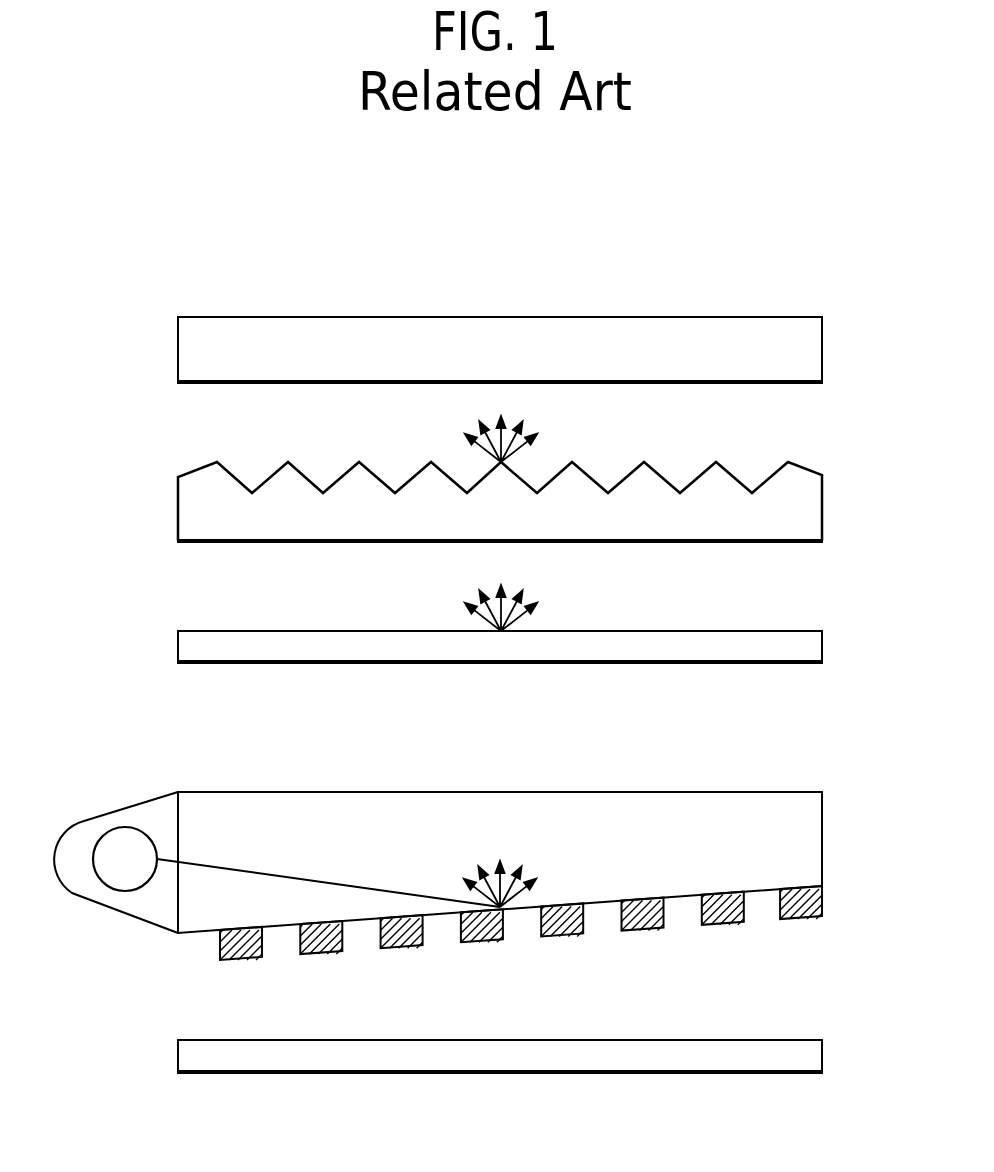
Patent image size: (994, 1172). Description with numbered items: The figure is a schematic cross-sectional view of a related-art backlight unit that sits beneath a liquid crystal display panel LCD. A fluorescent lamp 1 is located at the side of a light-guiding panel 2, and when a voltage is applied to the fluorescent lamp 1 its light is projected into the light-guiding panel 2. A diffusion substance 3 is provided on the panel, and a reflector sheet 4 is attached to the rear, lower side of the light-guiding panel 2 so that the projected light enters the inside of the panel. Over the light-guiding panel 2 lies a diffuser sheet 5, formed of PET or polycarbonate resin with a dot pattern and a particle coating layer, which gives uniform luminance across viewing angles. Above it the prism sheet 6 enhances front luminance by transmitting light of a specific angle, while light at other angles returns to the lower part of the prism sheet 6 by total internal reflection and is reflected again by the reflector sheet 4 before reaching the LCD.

The liquid crystal display panel LCD is at (817, 352).
The prism sheet 6 is at (817, 513).
The diffuser sheet 5 is at (817, 648).
The light-guiding panel 2 is at (817, 840).
The fluorescent lamp 1 is at (110, 837).
The diffusion substance 3 is at (817, 904).
The reflector sheet 4 is at (817, 1055).